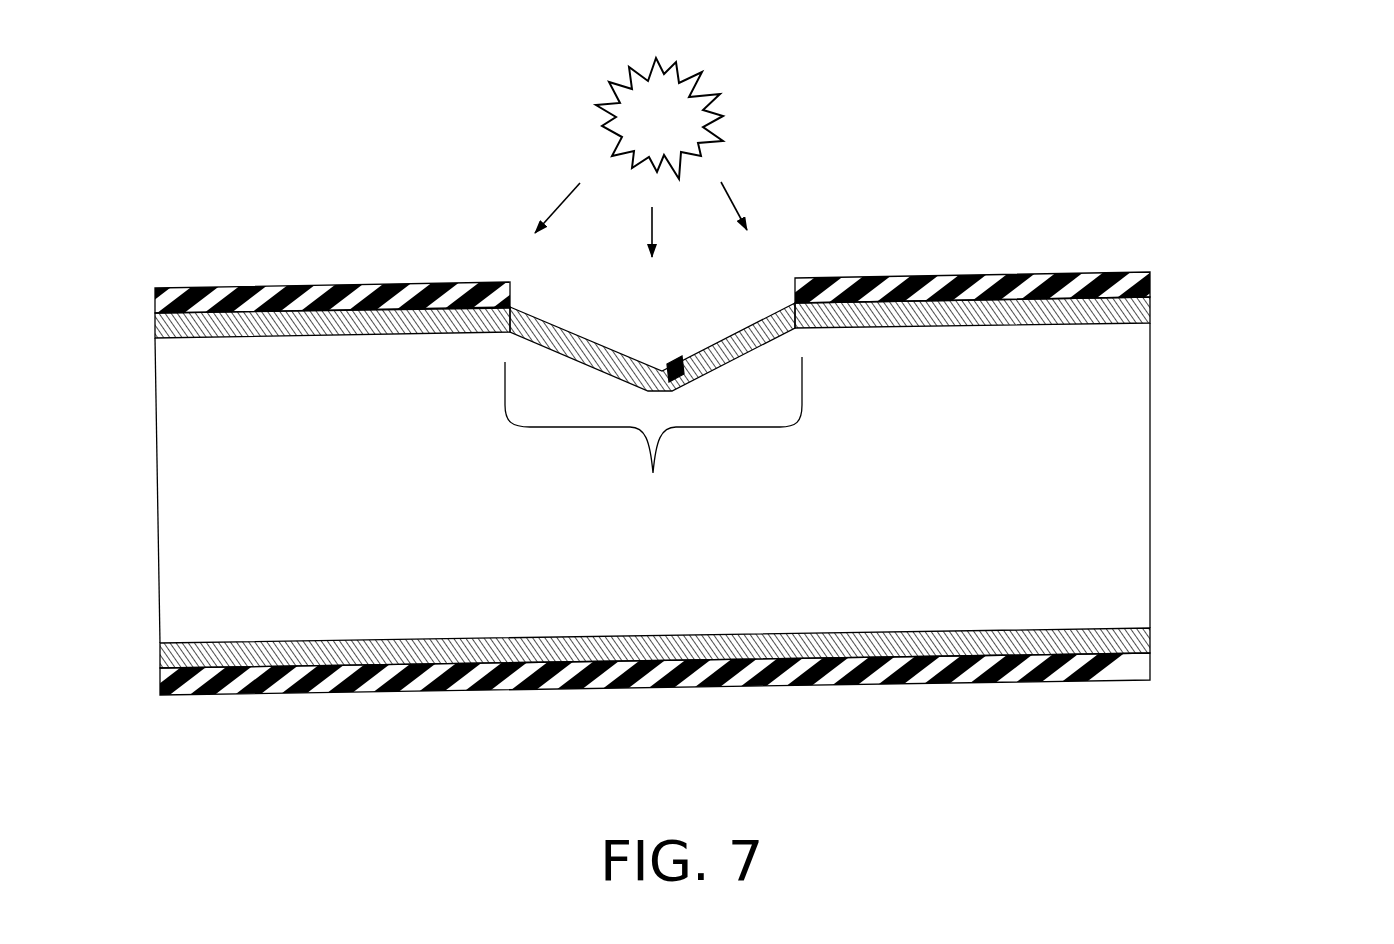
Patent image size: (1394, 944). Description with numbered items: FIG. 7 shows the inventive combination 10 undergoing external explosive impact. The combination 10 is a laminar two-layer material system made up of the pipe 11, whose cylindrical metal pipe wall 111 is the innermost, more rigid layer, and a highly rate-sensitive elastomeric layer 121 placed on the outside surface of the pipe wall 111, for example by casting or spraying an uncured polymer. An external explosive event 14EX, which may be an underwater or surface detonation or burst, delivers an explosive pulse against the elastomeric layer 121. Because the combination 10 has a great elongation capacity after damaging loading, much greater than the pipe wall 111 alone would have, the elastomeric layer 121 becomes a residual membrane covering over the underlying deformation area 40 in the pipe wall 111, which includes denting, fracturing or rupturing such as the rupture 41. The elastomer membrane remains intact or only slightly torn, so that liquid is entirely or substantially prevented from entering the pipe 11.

The inventive combination 10 is at (1037, 733).
The pipe 11 is at (1168, 297).
The pipe wall 111 is at (165, 330).
The elastomeric layer 121 is at (1147, 280).
The deformation area 40 is at (653, 473).
The rupture 41 is at (668, 362).
The external explosive event 14EX is at (747, 98).